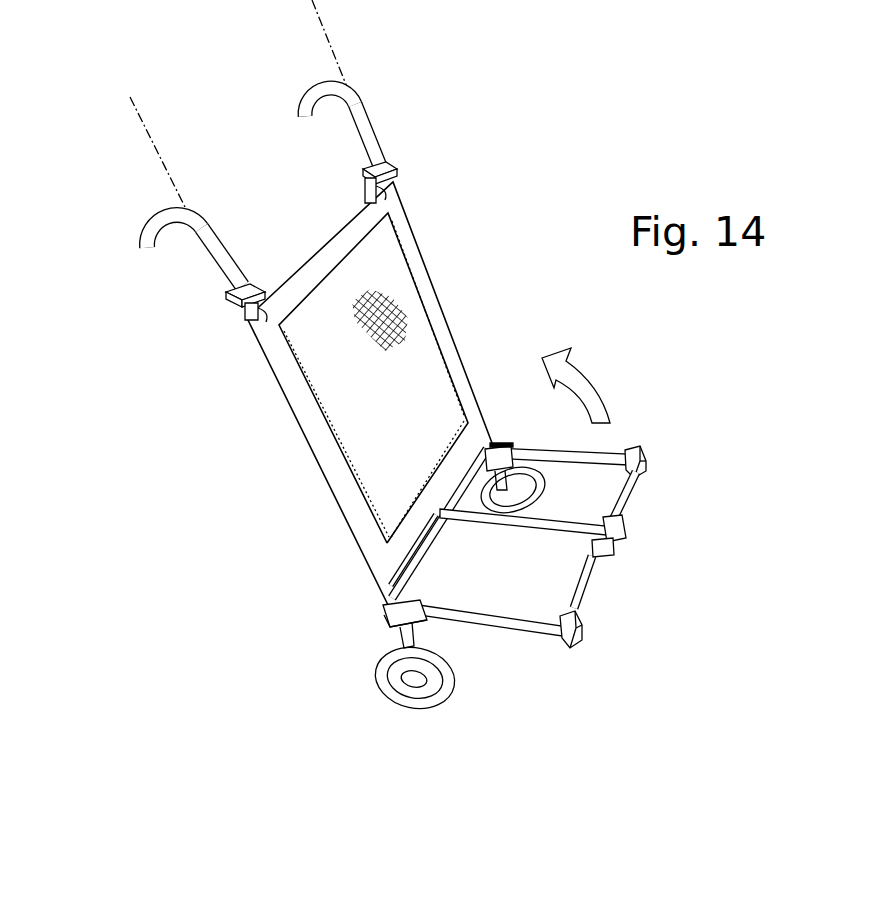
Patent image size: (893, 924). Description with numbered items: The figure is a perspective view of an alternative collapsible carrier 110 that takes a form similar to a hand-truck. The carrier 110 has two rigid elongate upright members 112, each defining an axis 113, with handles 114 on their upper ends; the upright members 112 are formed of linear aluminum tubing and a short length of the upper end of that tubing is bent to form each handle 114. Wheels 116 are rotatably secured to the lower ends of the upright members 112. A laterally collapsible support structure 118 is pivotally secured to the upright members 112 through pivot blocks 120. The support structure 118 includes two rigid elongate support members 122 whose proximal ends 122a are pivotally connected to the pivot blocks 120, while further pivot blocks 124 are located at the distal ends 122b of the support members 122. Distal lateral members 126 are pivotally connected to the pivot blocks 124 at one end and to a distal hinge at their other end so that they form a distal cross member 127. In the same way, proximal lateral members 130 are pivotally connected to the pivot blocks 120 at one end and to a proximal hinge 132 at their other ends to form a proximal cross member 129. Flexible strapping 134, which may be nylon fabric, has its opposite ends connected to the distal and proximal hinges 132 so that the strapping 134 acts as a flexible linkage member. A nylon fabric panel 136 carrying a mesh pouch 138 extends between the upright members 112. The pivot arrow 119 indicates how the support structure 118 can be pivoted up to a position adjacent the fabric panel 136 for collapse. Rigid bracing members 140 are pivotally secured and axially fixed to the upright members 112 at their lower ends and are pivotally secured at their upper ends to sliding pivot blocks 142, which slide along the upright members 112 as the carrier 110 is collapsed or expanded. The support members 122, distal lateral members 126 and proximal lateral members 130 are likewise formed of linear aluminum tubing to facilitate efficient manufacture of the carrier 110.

The collapsible carrier 110 is at (524, 152).
The upright member 112 is at (379, 149).
The axis 113 is at (330, 39).
The handle 114 is at (300, 108).
The wheel 116 is at (547, 485).
The support structure 118 is at (654, 626).
The pivot arrow 119 is at (600, 390).
The pivot block 120 is at (497, 443).
The support member 122 is at (538, 449).
The proximal end 122a is at (527, 447).
The distal end 122b is at (622, 455).
The pivot block 124 is at (646, 464).
The distal lateral member 126 is at (624, 498).
The distal cross member 127 is at (637, 537).
The proximal cross member 129 is at (446, 553).
The proximal lateral member 130 is at (467, 440).
The proximal hinge 132 is at (443, 527).
The flexible strapping 134 is at (562, 528).
The fabric panel 136 is at (320, 437).
The mesh pouch 138 is at (337, 287).
The bracing member 140 is at (362, 192).
The sliding pivot block 142 is at (398, 171).